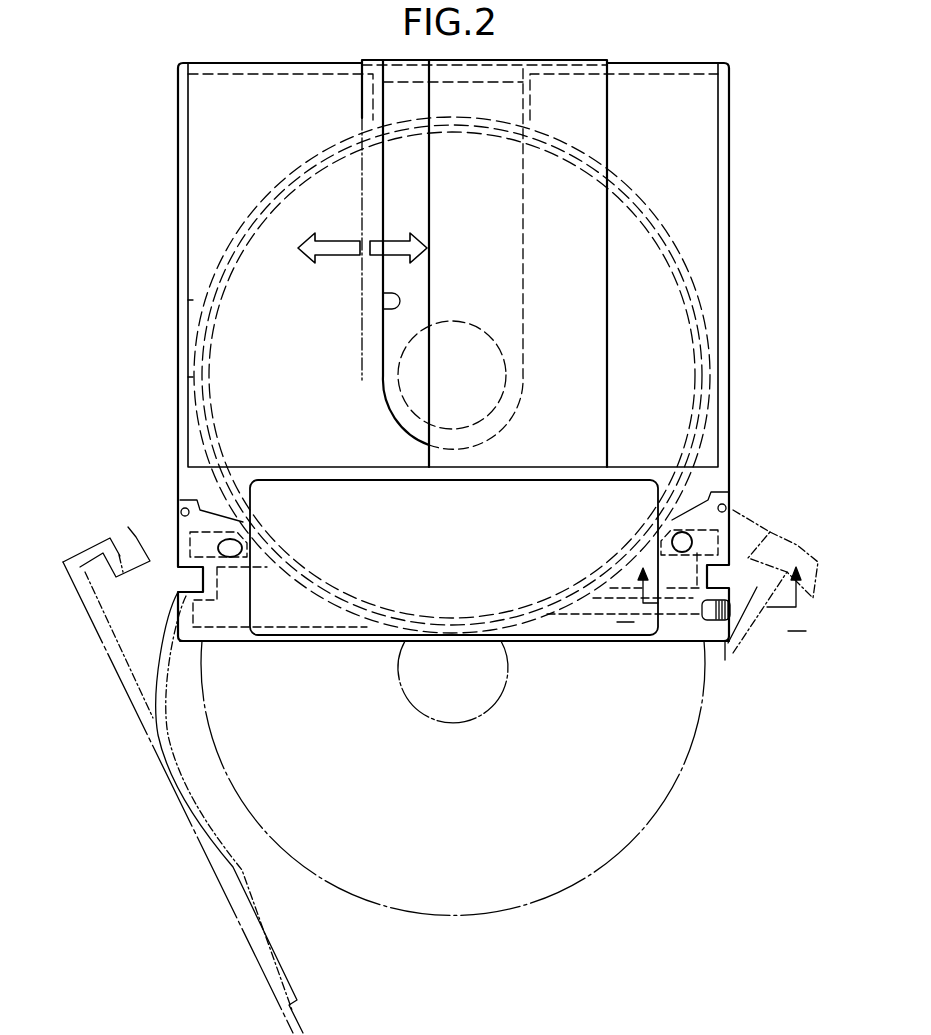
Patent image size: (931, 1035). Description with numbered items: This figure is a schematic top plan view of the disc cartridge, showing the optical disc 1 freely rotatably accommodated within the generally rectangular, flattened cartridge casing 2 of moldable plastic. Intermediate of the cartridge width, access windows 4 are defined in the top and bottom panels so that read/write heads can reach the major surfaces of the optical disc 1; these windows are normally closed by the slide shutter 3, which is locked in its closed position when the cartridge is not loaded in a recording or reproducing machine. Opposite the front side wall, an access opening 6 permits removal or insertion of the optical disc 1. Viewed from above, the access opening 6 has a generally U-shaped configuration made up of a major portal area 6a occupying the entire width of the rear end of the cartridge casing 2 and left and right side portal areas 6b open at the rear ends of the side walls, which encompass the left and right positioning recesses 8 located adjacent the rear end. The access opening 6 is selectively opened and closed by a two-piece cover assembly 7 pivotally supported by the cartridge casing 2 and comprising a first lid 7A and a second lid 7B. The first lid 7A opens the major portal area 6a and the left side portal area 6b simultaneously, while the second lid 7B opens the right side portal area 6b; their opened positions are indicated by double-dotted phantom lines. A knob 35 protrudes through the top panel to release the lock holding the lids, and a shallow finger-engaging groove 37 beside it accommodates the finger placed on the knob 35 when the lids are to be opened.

The optical disc 1 is at (398, 126).
The cartridge casing 2 is at (176, 95).
The slide shutter 3 is at (607, 326).
The access windows 4 is at (397, 308).
The access opening 6 is at (341, 650).
The major portal area 6a is at (533, 641).
The side portal areas 6b is at (176, 532).
The cover assembly 7 is at (575, 625).
The first lid 7A is at (300, 585).
The second lid 7B is at (633, 562).
The positioning recesses 8 is at (190, 578).
The knob 35 is at (732, 612).
The finger-engaging groove 37 is at (706, 618).